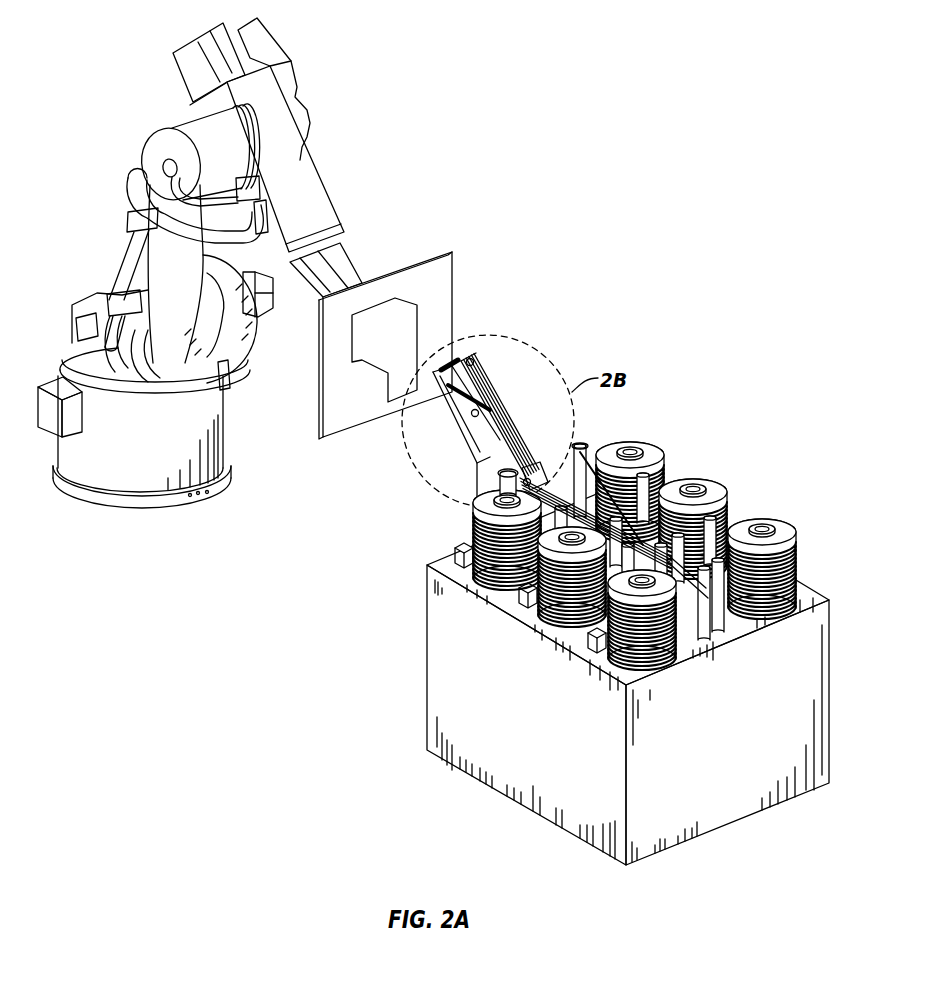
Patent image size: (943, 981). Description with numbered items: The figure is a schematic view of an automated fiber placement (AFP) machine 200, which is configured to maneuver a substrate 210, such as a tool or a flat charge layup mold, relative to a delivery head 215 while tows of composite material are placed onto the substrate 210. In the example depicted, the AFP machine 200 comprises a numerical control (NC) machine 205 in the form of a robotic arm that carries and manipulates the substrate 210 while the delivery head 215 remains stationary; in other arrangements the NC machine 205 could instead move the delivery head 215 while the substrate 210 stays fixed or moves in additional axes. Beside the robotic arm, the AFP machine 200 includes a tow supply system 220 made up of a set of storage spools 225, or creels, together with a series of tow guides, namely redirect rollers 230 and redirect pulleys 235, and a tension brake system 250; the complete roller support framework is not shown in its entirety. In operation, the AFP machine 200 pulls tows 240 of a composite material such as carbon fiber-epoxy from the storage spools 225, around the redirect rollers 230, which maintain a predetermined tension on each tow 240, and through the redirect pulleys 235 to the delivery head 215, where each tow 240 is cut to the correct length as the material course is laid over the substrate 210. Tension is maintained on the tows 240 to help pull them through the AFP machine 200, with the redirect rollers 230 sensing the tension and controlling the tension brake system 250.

The automated fiber placement (AFP) machine 200 is at (580, 224).
The numerical control (NC) machine 205 is at (307, 194).
The substrate 210 is at (400, 330).
The delivery head 215 is at (430, 390).
The tow supply system 220 is at (713, 418).
The storage spools 225 is at (763, 530).
The redirect rollers 230 is at (581, 440).
The redirect pulleys 235 is at (480, 353).
The tows 240 is at (498, 400).
The tension brake system 250 is at (458, 545).